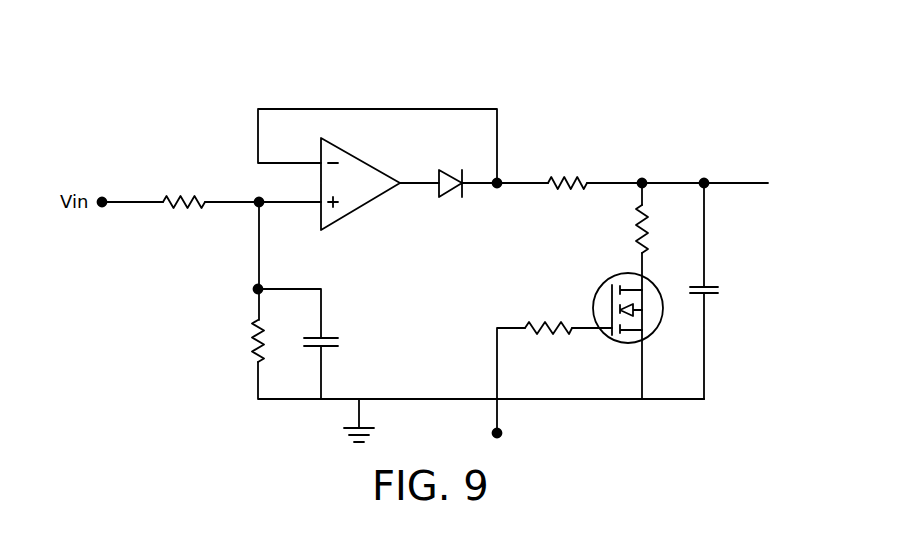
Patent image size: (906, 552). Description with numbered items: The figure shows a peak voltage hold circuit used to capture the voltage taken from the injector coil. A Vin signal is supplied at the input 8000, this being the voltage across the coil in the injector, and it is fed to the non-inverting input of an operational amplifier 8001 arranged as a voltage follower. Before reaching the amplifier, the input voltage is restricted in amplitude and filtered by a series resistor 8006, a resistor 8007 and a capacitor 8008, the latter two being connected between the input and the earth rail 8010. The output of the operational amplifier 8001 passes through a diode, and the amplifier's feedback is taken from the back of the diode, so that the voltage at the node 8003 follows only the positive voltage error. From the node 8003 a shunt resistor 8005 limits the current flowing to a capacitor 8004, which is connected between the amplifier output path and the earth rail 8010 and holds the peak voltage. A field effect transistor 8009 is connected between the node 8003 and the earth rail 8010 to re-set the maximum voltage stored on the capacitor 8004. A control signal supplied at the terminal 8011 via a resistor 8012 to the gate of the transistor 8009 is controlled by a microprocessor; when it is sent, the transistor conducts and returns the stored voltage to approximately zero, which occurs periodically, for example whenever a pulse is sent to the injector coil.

The Vin signal input 8000 is at (104, 205).
The operational amplifier 8001 is at (366, 206).
The node 8003 is at (499, 187).
The capacitor 8004 is at (718, 290).
The shunt resistor 8005 is at (587, 183).
The resistor 8006 is at (163, 200).
The resistor 8007 is at (253, 340).
The capacitor 8008 is at (340, 342).
The field effect transistor 8009 is at (600, 285).
The earth rail 8010 is at (592, 399).
The control signal input 8011 is at (500, 436).
The resistor 8012 is at (527, 325).